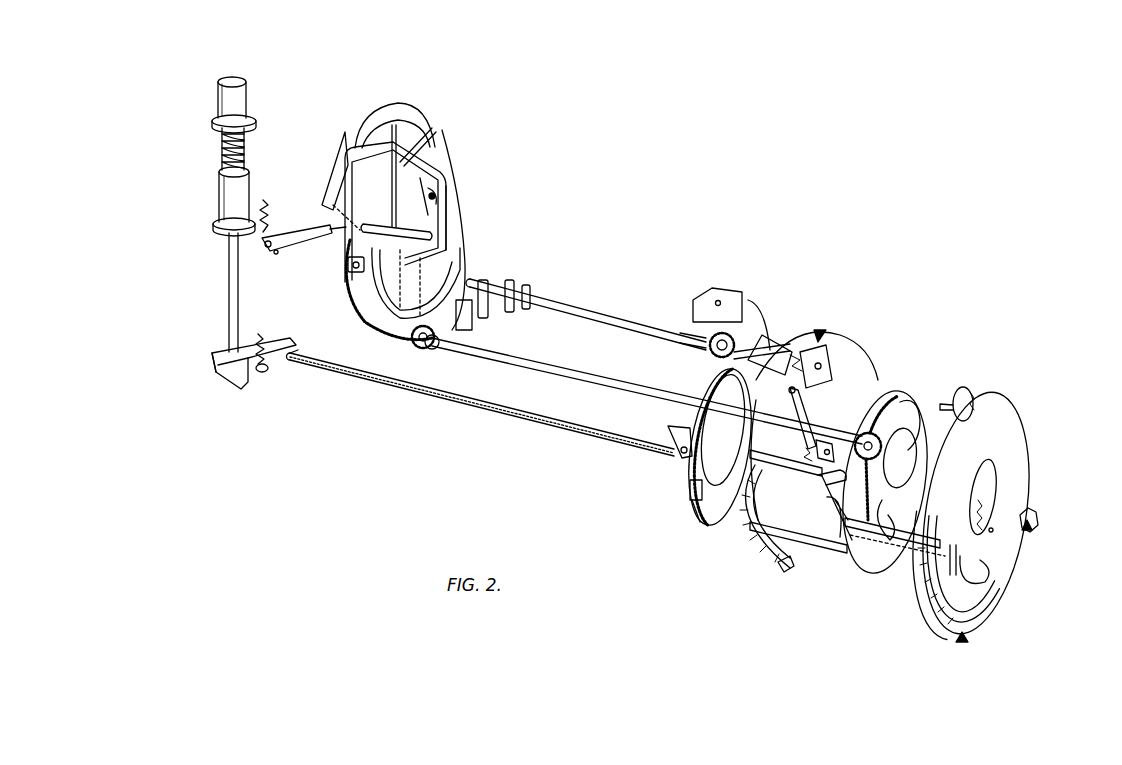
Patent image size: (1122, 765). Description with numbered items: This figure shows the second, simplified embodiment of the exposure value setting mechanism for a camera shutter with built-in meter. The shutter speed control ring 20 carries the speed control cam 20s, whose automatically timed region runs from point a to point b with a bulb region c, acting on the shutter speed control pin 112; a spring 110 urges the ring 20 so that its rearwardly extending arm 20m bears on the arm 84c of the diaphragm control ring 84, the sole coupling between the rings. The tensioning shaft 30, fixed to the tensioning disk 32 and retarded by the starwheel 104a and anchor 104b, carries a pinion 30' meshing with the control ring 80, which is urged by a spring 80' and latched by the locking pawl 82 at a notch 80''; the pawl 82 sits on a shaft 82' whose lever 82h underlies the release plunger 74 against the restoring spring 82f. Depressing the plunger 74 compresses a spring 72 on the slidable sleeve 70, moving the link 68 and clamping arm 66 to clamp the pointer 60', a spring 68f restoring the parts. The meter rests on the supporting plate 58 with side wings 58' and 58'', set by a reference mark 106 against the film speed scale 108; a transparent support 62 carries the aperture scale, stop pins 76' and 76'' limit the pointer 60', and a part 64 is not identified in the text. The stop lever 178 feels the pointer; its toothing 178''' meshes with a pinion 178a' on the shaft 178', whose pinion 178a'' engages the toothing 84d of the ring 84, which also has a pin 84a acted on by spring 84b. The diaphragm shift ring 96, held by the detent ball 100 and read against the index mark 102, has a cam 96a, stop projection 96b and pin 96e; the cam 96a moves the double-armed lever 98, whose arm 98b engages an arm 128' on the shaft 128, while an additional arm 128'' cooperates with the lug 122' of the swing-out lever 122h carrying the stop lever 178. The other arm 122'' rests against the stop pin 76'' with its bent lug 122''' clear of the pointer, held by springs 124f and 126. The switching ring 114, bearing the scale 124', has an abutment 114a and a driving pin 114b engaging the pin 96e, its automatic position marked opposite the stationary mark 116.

The shutter speed control ring 20 is at (1010, 422).
The rearwardly extending arm 20m is at (870, 542).
The speed control cam 20s is at (935, 606).
The tensioning shaft 30 is at (694, 355).
The pinion 30' is at (753, 336).
The tensioning disk 32 is at (972, 392).
The supporting plate 58 is at (369, 290).
The side wing 58' is at (332, 178).
The side wing 58'' is at (472, 211).
The pointer 60' is at (416, 157).
The transparent support 62 is at (385, 118).
The bar 64 is at (416, 148).
The clamping arm 66 is at (345, 180).
The link 68 is at (268, 253).
The spring 68f is at (266, 204).
The slidable sleeve 70 is at (220, 205).
The spring 72 is at (222, 152).
The release plunger 74 is at (248, 100).
The stop pin 76' is at (330, 261).
The stop pin 76'' is at (438, 216).
The control ring 80 is at (717, 455).
The spring 80' is at (672, 492).
The notch 80'' is at (673, 519).
The locking pawl 82 is at (658, 433).
The shaft 82' is at (481, 408).
The restoring spring 82f is at (257, 334).
The lever 82h is at (248, 388).
The diaphragm control ring 84 is at (925, 406).
The pin 84a is at (771, 460).
The spring 84b is at (806, 450).
The arm 84c is at (830, 550).
The toothing 84d is at (906, 398).
The diaphragm shift ring 96 is at (752, 548).
The cam surface 96a is at (830, 474).
The stop projection 96b is at (782, 568).
The pin 96e is at (830, 504).
The double-armed lever 98 is at (805, 418).
The lever arm 98b is at (791, 394).
The detent ball 100 is at (812, 355).
The stationary index mark 102 is at (821, 324).
The starwheel 104a is at (757, 302).
The anchor 104b is at (722, 300).
The reference mark 106 is at (413, 337).
The film speed scale 108 is at (352, 362).
The spring 110 is at (990, 500).
The shutter speed control pin 112 is at (994, 480).
The switching ring 114 is at (996, 612).
The switching abutment 114a is at (1003, 582).
The driving pin 114b is at (1000, 556).
The stationary mark 116 is at (966, 648).
The lug 122' is at (498, 311).
The arm 122'' is at (468, 173).
The bent lug 122''' is at (465, 167).
The swing-out lever 122h is at (400, 312).
The scale 124' is at (1059, 513).
The spring 124f is at (790, 348).
The spring 126 is at (516, 283).
The shaft 128 is at (586, 314).
The arm 128' is at (828, 351).
The additional arm 128'' is at (549, 312).
The stop lever 178 is at (478, 204).
The shaft 178' is at (647, 391).
The toothing 178''' is at (474, 341).
The pinion 178a' is at (412, 379).
The pinion 178a'' is at (880, 445).
The point a is at (975, 552).
The point b is at (962, 487).
The region c is at (990, 568).